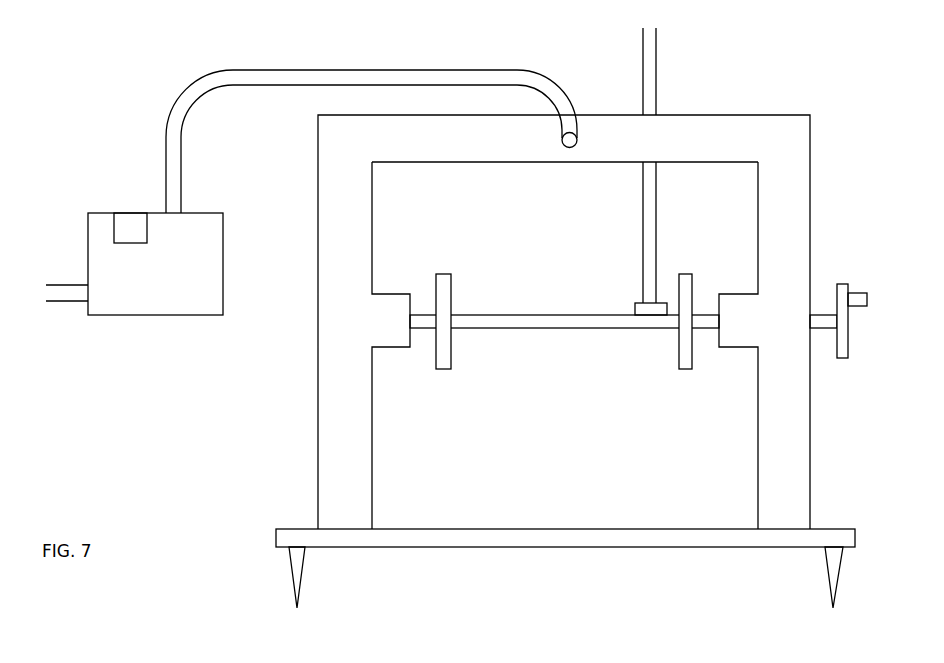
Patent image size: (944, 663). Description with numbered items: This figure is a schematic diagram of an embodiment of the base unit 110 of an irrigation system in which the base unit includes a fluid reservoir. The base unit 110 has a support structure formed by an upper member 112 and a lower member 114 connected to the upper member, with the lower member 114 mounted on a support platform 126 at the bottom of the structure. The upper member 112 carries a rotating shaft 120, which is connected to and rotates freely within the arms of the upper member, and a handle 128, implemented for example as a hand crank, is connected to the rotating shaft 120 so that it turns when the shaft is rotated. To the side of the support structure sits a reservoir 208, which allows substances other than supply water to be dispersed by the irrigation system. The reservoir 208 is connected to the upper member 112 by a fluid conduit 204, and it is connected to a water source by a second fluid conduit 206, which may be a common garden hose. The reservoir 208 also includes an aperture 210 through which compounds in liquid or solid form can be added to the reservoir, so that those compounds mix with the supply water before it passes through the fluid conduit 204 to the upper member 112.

The base unit 110 is at (588, 318).
The upper member 112 is at (810, 147).
The lower member 114 is at (810, 424).
The rotating shaft 120 is at (502, 328).
The support platform 126 is at (587, 538).
The handle 128 is at (850, 340).
The fluid conduit 204 is at (409, 77).
The fluid conduit 206 is at (61, 292).
The reservoir 208 is at (197, 297).
The aperture 210 is at (133, 225).